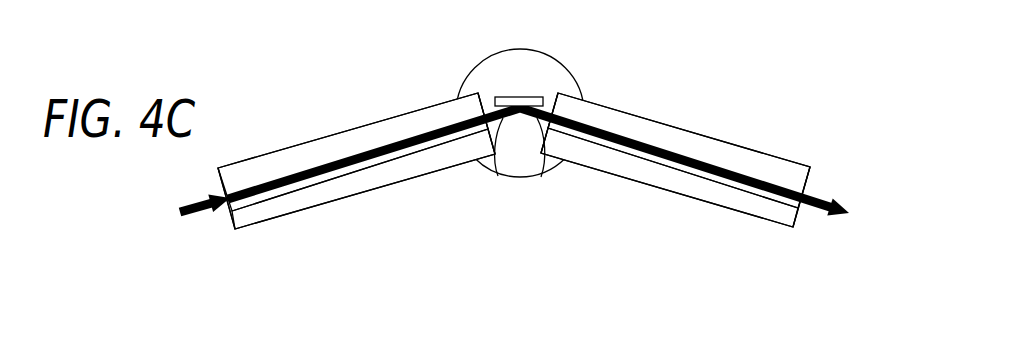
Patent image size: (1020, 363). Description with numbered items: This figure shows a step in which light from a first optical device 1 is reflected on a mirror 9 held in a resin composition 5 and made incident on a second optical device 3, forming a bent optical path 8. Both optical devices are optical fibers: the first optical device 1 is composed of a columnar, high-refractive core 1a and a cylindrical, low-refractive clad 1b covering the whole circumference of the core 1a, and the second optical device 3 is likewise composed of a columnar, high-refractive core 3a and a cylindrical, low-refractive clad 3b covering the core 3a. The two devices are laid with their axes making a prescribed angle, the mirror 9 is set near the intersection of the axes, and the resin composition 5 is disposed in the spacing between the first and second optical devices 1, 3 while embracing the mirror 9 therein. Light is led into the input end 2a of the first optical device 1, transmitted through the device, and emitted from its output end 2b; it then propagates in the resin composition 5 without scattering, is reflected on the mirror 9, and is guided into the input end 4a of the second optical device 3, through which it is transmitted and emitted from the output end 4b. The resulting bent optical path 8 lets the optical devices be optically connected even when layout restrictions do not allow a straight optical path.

The first optical device 1 is at (338, 226).
The core 1a is at (387, 162).
The clad 1b is at (372, 122).
The input end 2a is at (224, 207).
The output end 2b is at (487, 176).
The second optical device 3 is at (717, 230).
The core 3a is at (667, 167).
The clad 3b is at (722, 141).
The input end 4a is at (555, 100).
The output end 4b is at (802, 210).
The resin composition 5 is at (490, 53).
The optical path 8 is at (538, 177).
The mirror 9 is at (525, 97).